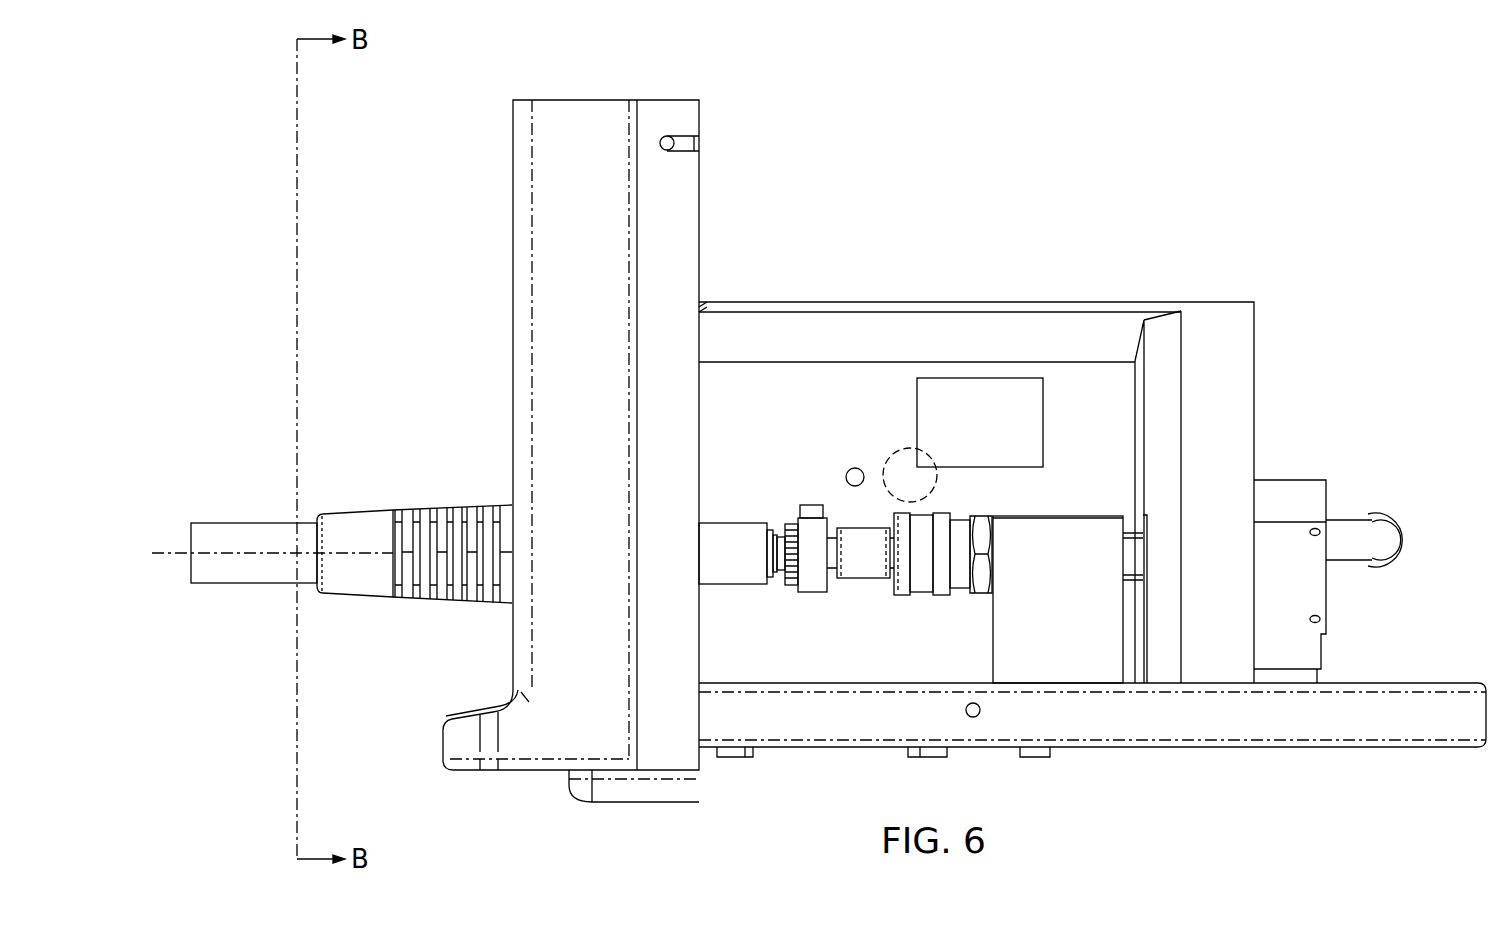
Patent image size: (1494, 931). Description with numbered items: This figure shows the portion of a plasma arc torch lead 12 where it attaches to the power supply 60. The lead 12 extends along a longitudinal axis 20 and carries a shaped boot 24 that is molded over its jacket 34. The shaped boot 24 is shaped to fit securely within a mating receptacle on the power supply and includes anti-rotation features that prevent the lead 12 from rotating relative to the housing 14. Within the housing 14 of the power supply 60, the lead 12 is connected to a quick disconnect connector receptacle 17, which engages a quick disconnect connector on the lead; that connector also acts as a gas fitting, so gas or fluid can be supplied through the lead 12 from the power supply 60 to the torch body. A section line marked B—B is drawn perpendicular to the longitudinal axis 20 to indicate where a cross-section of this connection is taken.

The lead 12 is at (210, 464).
The housing 14 is at (707, 301).
The quick disconnect connector receptacle 17 is at (978, 598).
The longitudinal axis 20 is at (153, 550).
The shaped boot 24 is at (510, 504).
The jacket 34 is at (248, 522).
The power supply 60 is at (850, 170).